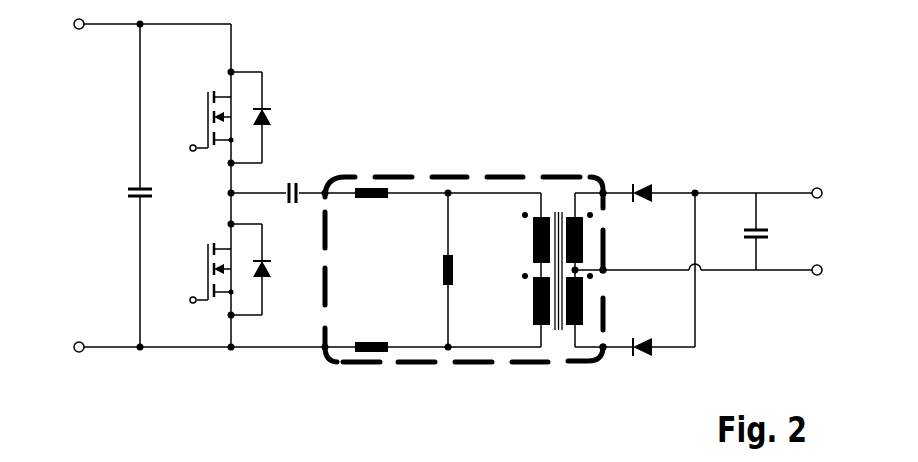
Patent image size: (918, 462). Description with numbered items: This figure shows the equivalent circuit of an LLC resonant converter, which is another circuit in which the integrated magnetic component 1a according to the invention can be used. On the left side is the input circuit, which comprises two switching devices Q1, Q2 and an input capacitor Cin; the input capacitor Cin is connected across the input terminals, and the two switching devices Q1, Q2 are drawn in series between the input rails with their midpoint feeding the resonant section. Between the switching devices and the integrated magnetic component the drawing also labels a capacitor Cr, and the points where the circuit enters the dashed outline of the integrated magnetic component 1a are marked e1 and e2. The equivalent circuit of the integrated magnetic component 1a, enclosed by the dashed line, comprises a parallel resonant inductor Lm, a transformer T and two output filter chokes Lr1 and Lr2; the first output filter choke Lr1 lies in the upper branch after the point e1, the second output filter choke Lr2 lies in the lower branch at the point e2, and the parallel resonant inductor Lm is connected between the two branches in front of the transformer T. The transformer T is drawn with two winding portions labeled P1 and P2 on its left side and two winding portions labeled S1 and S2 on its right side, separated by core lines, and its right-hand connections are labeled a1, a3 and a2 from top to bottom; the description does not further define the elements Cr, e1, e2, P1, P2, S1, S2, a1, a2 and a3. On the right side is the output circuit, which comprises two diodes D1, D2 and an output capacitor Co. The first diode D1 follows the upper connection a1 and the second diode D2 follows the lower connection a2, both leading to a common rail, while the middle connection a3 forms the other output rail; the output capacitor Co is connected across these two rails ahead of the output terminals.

The integrated magnetic component 1a is at (460, 126).
The input capacitor Cin is at (114, 185).
The switching device Q1 is at (223, 110).
The switching device Q2 is at (223, 263).
The resonant capacitor Cr is at (293, 172).
The first terminal node e1 is at (332, 171).
The second terminal node e2 is at (332, 371).
The output filter choke Lr1 is at (372, 216).
The output filter choke Lr2 is at (372, 328).
The parallel resonant inductor Lm is at (427, 270).
The transformer T is at (561, 255).
The first primary winding P1 is at (523, 228).
The second primary winding P2 is at (523, 305).
The first secondary winding S1 is at (593, 235).
The second secondary winding S2 is at (593, 308).
The first secondary terminal a1 is at (602, 171).
The second secondary terminal a2 is at (602, 372).
The center tap terminal a3 is at (617, 284).
The diode D1 is at (633, 169).
The diode D2 is at (633, 369).
The output capacitor Co is at (778, 231).